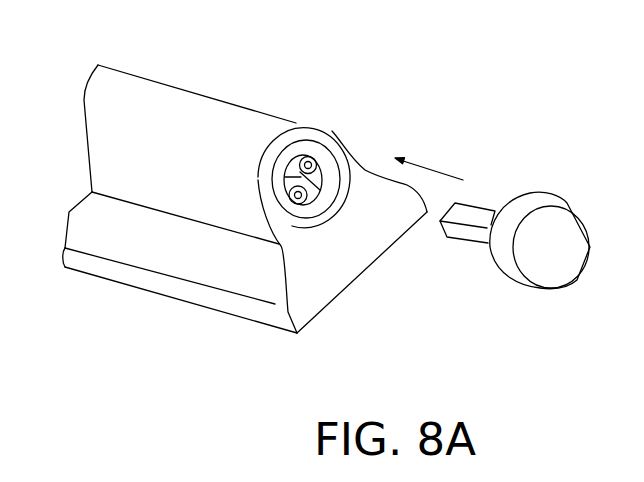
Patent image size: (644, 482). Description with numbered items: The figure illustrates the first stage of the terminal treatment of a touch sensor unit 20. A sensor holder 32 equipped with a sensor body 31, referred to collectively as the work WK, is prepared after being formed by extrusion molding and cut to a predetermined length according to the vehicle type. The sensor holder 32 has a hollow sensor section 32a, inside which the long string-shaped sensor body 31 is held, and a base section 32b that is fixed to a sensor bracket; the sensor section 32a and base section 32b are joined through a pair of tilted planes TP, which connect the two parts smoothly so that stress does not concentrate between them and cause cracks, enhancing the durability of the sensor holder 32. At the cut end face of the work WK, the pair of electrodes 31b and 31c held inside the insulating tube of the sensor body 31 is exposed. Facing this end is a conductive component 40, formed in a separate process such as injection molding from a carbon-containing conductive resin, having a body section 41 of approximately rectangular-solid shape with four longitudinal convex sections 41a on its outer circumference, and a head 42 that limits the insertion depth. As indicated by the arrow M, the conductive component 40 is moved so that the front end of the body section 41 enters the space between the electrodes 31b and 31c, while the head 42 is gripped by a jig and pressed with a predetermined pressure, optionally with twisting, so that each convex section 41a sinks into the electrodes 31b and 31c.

The work WK is at (192, 67).
The sensor section 32a is at (128, 98).
The sensor holder 32 is at (276, 272).
The base section 32b is at (185, 288).
The tilted plane TP is at (151, 238).
The sensor body 31 is at (327, 133).
The electrode 31b is at (308, 142).
The electrode 31c is at (301, 225).
The arrow M is at (429, 160).
The touch sensor unit 20 is at (500, 202).
The conductive component 40 is at (551, 192).
The body section 41 is at (443, 233).
The convex section 41a is at (482, 206).
The head 42 is at (550, 248).